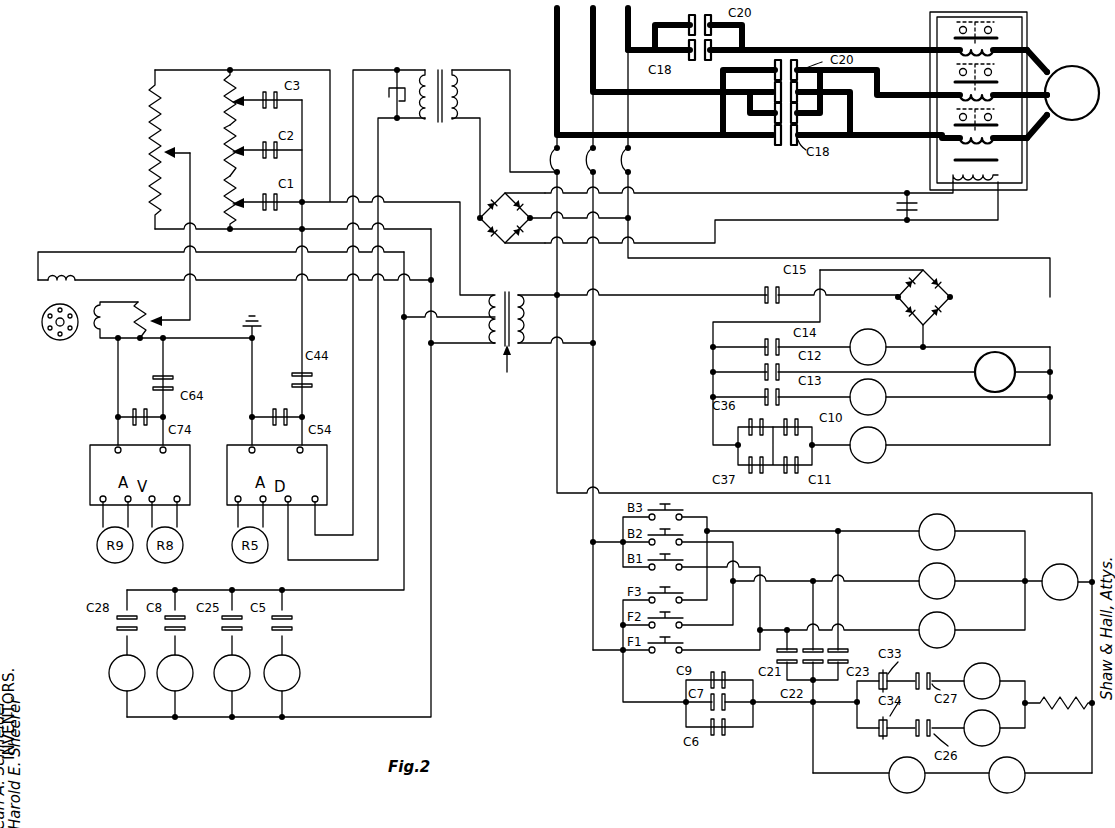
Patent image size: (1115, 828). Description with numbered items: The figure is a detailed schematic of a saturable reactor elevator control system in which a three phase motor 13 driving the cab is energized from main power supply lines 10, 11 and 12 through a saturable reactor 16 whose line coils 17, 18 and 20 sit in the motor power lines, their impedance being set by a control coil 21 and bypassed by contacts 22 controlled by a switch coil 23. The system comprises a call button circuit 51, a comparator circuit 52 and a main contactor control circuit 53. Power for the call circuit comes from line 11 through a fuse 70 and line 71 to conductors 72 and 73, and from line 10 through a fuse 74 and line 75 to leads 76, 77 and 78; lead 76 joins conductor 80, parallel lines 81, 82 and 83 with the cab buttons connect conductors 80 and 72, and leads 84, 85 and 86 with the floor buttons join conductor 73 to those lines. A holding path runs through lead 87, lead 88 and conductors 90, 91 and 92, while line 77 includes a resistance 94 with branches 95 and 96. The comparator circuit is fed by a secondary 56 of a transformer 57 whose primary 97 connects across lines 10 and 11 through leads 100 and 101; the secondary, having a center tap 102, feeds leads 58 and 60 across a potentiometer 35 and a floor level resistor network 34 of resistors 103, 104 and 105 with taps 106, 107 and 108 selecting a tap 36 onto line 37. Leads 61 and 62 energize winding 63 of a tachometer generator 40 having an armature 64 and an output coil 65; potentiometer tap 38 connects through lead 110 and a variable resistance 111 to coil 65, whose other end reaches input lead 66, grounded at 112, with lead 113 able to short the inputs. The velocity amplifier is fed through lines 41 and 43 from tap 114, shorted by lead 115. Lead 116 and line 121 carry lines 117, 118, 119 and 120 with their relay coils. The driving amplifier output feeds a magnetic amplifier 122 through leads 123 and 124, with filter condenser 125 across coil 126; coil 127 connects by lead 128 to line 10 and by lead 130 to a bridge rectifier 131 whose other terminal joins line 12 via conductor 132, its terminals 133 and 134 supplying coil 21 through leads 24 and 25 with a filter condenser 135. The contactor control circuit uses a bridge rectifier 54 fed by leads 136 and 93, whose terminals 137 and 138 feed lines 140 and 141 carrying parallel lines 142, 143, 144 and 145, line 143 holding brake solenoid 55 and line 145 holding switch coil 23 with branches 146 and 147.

The main power supply line 10 is at (552, 18).
The main power supply line 11 is at (590, 18).
The main power supply line 12 is at (626, 18).
The three phase alternating current motor 13 is at (1080, 67).
The saturable reactor 16 is at (930, 20).
The line coil 17 is at (958, 54).
The line coil 18 is at (958, 98).
The line coil 20 is at (958, 142).
The control coil 21 is at (1000, 176).
The contacts 22 is at (998, 24).
The switch coil 23 is at (868, 445).
The lead 24 is at (746, 192).
The lead 25 is at (748, 218).
The floor level resistor network 34 is at (230, 130).
The potentiometer 35 is at (149, 124).
The floor level tap 36 is at (240, 100).
The line 37 is at (304, 316).
The potentiometer tap 38 is at (176, 156).
The tachometer generator 40 is at (44, 328).
The line 41 is at (116, 392).
The line 43 is at (166, 356).
The call button circuit 51 is at (1040, 493).
The comparator circuit 52 is at (107, 254).
The main contactor control circuit 53 is at (1050, 347).
The bridge rectifier 54 is at (938, 282).
The brake solenoid 55 is at (995, 372).
The secondary 56 is at (492, 346).
The transformer 57 is at (507, 342).
The lead 58 is at (330, 68).
The lead 60 is at (428, 227).
The lead 61 is at (86, 250).
The lead 62 is at (148, 278).
The winding 63 is at (44, 282).
The armature 64 is at (62, 340).
The output coil 65 is at (114, 342).
The input lead 66 is at (250, 374).
The fuse 70 is at (604, 161).
The line 71 is at (598, 406).
The conductor 72 is at (620, 556).
The conductor 73 is at (620, 624).
The fuse 74 is at (567, 161).
The line 75 is at (556, 420).
The lead 76 is at (1090, 576).
The line 77 is at (1090, 698).
The line 78 is at (862, 776).
The conductor 80 is at (1030, 576).
The line 81 is at (1020, 628).
The line 82 is at (1020, 580).
The line 83 is at (1018, 530).
The lead 84 is at (845, 630).
The lead 85 is at (760, 596).
The lead 86 is at (818, 583).
The lead 87 is at (642, 706).
The lead 88 is at (818, 700).
The conductor 90 is at (812, 605).
The conductor 91 is at (810, 616).
The conductor 92 is at (848, 534).
The line 93 is at (684, 294).
The resistance 94 is at (1058, 698).
The branch 95 is at (1006, 734).
The branch 96 is at (1020, 678).
The primary 97 is at (524, 308).
The lead 100 is at (550, 294).
The lead 101 is at (530, 348).
The center tap 102 is at (488, 312).
The resistor 103 is at (226, 96).
The resistor 104 is at (226, 156).
The resistor 105 is at (226, 204).
The tap 106 is at (248, 104).
The tap 107 is at (248, 154).
The tap 108 is at (248, 206).
The lead 110 is at (192, 278).
The variable resistance 111 is at (142, 310).
The ground 112 is at (260, 324).
The lead 113 is at (276, 410).
The tap 114 is at (186, 306).
The lead 115 is at (136, 410).
The lead 116 is at (434, 540).
The line 117 is at (288, 702).
The line 118 is at (236, 706).
The line 119 is at (178, 706).
The line 120 is at (130, 706).
The line 121 is at (408, 404).
The magnetic amplifier 122 is at (440, 70).
The lead 123 is at (366, 62).
The lead 124 is at (384, 158).
The filter condenser 125 is at (390, 96).
The coil 126 is at (426, 72).
The coil 127 is at (460, 86).
The lead 128 is at (512, 132).
The lead 130 is at (478, 166).
The bridge rectifier 131 is at (496, 236).
The conductor 132 is at (632, 214).
The D. C. terminal 133 is at (508, 192).
The D. C. terminal 134 is at (508, 244).
The filter condenser 135 is at (920, 206).
The lead 136 is at (834, 258).
The D. C. terminal 137 is at (926, 268).
The D. C. terminal 138 is at (932, 326).
The line 140 is at (822, 306).
The line 141 is at (1052, 390).
The line 142 is at (910, 350).
The line 143 is at (916, 374).
The line 144 is at (924, 400).
The line 145 is at (914, 448).
The branch 146 is at (782, 424).
The branch 147 is at (776, 450).